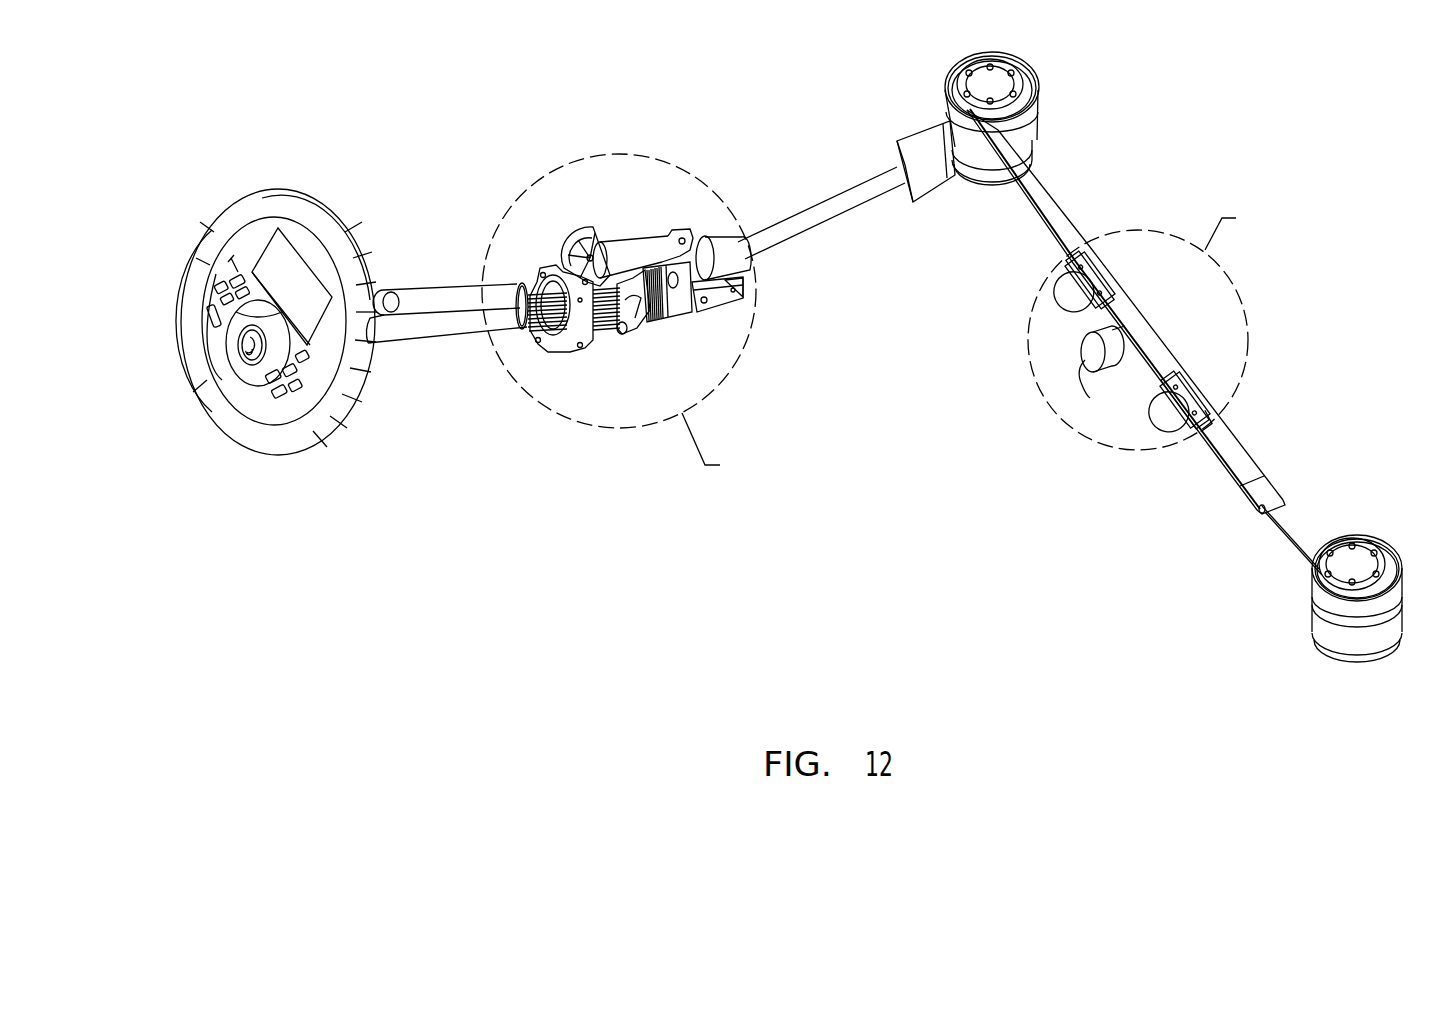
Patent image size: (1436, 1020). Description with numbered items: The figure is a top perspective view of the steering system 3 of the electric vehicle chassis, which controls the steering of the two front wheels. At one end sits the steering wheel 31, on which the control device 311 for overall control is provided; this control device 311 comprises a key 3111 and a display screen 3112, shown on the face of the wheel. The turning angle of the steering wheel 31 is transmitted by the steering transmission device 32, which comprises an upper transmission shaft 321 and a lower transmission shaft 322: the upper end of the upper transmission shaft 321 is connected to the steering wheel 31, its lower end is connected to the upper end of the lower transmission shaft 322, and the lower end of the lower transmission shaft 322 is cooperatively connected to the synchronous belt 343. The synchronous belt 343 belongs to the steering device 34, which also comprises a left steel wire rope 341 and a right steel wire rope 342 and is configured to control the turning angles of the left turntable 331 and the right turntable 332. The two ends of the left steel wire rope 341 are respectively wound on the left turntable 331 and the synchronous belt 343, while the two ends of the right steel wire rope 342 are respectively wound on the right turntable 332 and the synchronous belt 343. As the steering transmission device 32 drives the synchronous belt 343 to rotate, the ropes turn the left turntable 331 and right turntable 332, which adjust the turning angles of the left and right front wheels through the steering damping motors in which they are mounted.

The steering system 3 is at (789, 359).
The steering wheel 31 is at (294, 353).
The control device 311 is at (412, 510).
The key 3111 is at (248, 382).
The display screen 3112 is at (332, 369).
The steering transmission device 32 is at (635, 318).
The upper transmission shaft 321 is at (466, 346).
The lower transmission shaft 322 is at (821, 236).
The left turntable 331 is at (1015, 93).
The right turntable 332 is at (1331, 627).
The steering device 34 is at (1095, 357).
The left steel wire rope 341 is at (911, 178).
The right steel wire rope 342 is at (1270, 555).
The synchronous belt 343 is at (1126, 311).